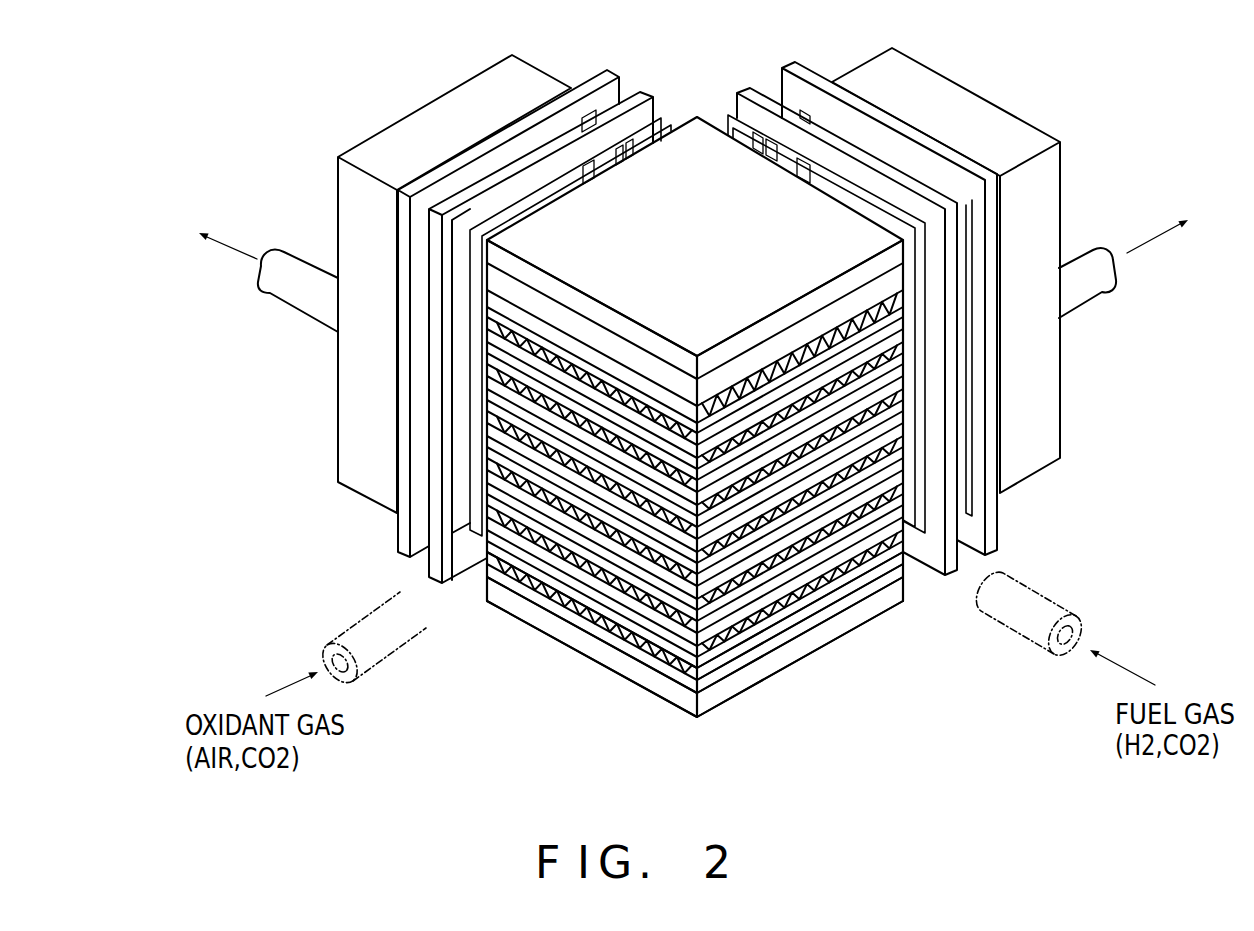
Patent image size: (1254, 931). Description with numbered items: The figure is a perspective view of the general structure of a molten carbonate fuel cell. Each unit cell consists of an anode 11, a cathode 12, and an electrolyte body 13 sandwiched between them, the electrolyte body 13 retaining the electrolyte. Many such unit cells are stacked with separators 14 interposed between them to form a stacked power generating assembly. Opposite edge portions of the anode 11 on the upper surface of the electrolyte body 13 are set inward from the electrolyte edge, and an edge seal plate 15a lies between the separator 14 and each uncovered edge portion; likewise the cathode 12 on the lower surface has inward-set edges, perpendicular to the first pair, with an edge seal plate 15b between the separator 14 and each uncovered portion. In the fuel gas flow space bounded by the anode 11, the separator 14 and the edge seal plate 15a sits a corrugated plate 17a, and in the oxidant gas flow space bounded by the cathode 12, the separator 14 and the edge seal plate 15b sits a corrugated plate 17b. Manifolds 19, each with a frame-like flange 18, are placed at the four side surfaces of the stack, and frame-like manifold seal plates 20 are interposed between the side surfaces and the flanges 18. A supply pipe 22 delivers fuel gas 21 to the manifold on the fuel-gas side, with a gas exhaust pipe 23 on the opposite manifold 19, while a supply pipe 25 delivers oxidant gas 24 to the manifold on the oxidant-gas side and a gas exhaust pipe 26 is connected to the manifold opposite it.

The anode 11 is at (790, 605).
The cathode 12 is at (615, 623).
The electrolyte body 13 is at (765, 613).
The separator 14 is at (732, 615).
The edge seal plate 15a is at (724, 613).
The edge seal plate 15b is at (685, 656).
The corrugated plate 17a is at (848, 592).
The corrugated plate 17b is at (567, 601).
The flange 18 is at (578, 86).
The manifold 19 is at (477, 83).
The manifold seal plate 20 is at (645, 93).
The fuel gas 21 is at (1128, 668).
The supply pipe 22 is at (1058, 582).
The gas exhaust pipe 23 is at (279, 289).
The oxidant gas 24 is at (284, 684).
The supply pipe 25 is at (390, 608).
The gas exhaust pipe 26 is at (1110, 281).